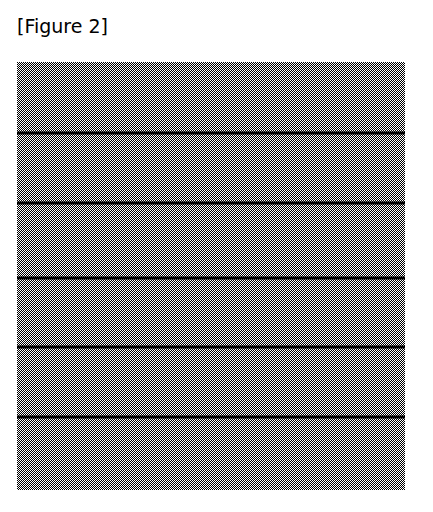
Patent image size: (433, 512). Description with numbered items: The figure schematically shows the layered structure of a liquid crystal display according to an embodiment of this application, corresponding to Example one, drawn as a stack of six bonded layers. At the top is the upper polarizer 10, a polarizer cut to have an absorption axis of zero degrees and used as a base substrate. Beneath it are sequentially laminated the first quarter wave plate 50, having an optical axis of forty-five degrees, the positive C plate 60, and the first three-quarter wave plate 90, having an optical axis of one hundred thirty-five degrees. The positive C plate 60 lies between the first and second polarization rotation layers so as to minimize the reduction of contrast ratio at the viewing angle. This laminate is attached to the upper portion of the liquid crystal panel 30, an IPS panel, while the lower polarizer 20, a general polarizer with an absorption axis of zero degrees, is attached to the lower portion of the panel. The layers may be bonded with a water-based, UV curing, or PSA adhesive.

The upper polarizer 10 is at (211, 97).
The first quarter wave plate 50 is at (211, 168).
The positive C plate 60 is at (211, 240).
The first three-quarter wave plate 90 is at (211, 312).
The liquid crystal panel 30 is at (211, 382).
The lower polarizer 20 is at (211, 453).